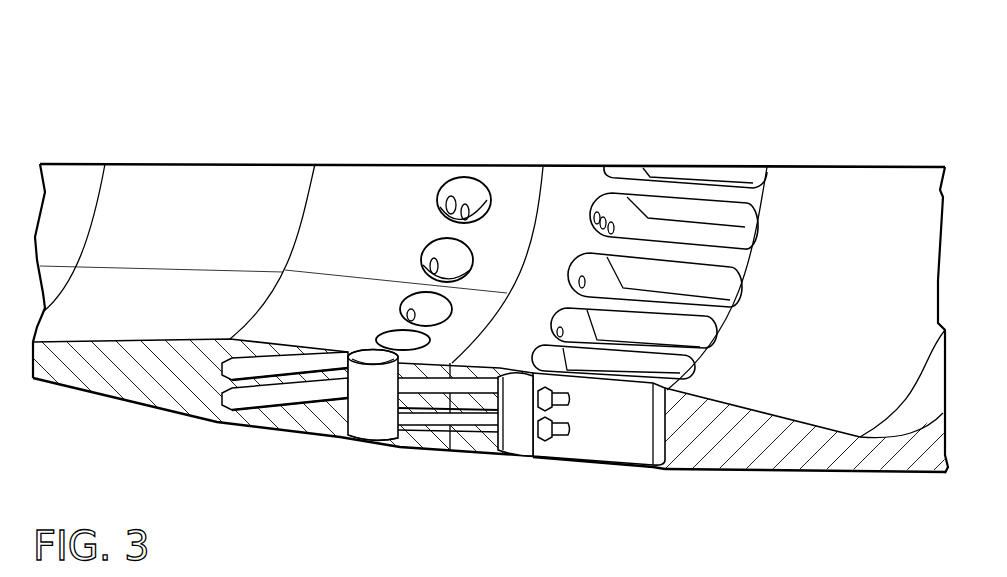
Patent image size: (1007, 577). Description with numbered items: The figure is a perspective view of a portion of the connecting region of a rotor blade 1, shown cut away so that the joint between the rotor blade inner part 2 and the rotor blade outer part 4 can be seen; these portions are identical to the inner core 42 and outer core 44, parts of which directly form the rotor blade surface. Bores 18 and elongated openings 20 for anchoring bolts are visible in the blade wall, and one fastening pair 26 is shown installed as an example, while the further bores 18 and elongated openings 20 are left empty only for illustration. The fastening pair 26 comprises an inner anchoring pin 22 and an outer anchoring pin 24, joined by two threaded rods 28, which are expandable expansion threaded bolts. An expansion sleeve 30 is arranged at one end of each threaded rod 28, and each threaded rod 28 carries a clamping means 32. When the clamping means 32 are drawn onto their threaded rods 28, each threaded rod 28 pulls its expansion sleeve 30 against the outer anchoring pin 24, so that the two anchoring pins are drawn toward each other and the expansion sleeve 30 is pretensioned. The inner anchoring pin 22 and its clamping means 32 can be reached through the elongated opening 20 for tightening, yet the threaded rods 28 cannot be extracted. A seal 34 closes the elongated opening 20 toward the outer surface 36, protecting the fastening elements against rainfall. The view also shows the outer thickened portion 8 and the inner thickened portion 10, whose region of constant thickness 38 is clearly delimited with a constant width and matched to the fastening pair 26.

The rotor blade 1 is at (547, 100).
The rotor blade inner part 2 is at (880, 178).
The rotor blade outer part 4 is at (134, 163).
The outer thickened portion 8 is at (100, 413).
The inner thickened portion 10 is at (767, 387).
The bore 18 is at (470, 186).
The elongated opening 20 is at (683, 228).
The inner anchoring pin 22 is at (512, 444).
The outer anchoring pin 24 is at (373, 443).
The fastening pair 26 is at (408, 475).
The threaded rod 28 is at (415, 388).
The expansion sleeve 30 is at (250, 375).
The clamping means 32 is at (543, 448).
The seal 34 is at (622, 474).
The outer surface 36 is at (723, 500).
The region of constant thickness 38 is at (404, 182).
The inner core 42 is at (823, 166).
The outer core 44 is at (215, 163).